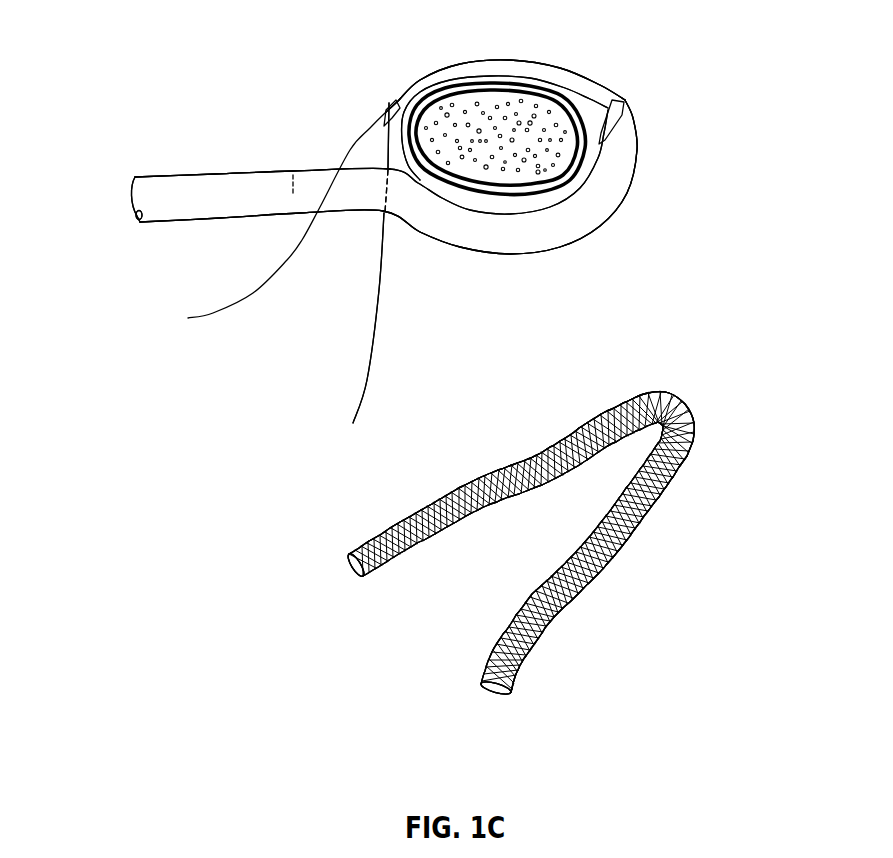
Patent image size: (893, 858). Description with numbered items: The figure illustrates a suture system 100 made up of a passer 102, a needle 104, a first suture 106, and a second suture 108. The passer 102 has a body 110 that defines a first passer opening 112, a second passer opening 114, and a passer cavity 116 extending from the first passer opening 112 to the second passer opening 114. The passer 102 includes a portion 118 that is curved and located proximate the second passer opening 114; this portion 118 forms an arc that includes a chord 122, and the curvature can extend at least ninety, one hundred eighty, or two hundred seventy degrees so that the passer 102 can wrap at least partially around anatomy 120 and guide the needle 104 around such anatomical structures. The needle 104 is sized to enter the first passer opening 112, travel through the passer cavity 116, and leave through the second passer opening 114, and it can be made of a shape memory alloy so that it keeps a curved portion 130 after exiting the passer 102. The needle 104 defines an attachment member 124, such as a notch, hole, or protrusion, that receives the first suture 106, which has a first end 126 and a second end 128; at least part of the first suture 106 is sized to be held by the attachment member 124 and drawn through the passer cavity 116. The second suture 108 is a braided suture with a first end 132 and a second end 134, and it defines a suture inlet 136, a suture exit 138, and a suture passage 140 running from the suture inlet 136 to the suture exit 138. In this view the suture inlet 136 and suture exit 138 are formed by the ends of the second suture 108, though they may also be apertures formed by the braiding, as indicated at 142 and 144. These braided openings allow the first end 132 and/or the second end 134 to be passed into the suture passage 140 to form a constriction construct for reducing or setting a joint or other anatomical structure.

The suture system 100 is at (165, 668).
The passer 102 is at (222, 116).
The needle 104 is at (383, 30).
The first suture 106 is at (420, 351).
The second suture 108 is at (697, 620).
The body 110 is at (207, 170).
The first passer opening 112 is at (134, 203).
The second passer opening 114 is at (613, 107).
The passer cavity 116 is at (293, 170).
The portion 118 is at (648, 262).
The anatomy 120 is at (475, 82).
The chord 122 is at (622, 199).
The attachment member 124 is at (383, 98).
The first end 126 is at (205, 318).
The second end 128 is at (360, 398).
The curved portion 130 is at (508, 70).
The first end 132 is at (513, 689).
The second end 134 is at (380, 568).
The suture inlet 136 is at (350, 574).
The suture exit 138 is at (497, 703).
The suture passage 140 is at (670, 480).
The aperture formed by braiding 142 is at (503, 503).
The aperture formed by braiding 144 is at (567, 588).